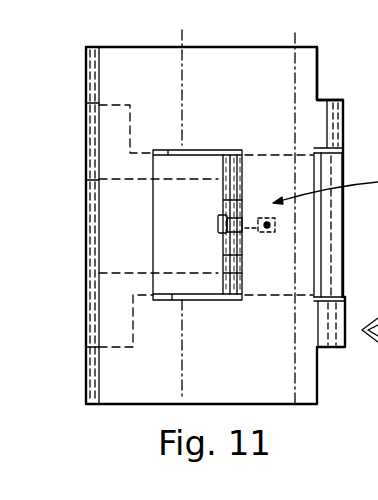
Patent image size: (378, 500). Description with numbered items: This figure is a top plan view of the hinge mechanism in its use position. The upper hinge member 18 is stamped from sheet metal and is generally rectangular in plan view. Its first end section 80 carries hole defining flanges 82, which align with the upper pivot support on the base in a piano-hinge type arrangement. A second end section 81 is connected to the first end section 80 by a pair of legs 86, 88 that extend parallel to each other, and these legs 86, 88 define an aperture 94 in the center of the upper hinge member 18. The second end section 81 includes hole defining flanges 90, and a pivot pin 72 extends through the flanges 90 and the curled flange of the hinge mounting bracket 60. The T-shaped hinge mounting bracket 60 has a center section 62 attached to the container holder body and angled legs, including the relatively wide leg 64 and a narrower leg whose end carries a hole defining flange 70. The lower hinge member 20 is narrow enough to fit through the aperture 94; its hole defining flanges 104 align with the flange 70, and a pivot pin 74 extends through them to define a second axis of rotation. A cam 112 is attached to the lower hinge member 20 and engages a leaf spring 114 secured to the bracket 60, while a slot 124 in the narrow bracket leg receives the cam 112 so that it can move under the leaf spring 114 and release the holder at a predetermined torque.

The upper hinge member 18 is at (130, 46).
The first end section 80 is at (310, 45).
The hole defining flanges 82 is at (343, 110).
The lower hinge member 20 is at (343, 172).
The hinge mounting bracket 60 is at (86, 150).
The second end section 81 is at (157, 82).
The leg 88 is at (256, 82).
The leg 86 is at (250, 378).
The center section 62 is at (205, 205).
The aperture 94 is at (207, 158).
The hole defining flange 70 is at (222, 246).
The slot 124 is at (217, 226).
The cam 112 is at (243, 225).
The hole defining flanges 104 is at (232, 263).
The pivot pin 74 is at (233, 300).
The hole defining flanges 90 is at (88, 376).
The pivot pin 72 is at (92, 406).
The angled leg 64 is at (377, 303).
The leaf spring 114 is at (377, 383).